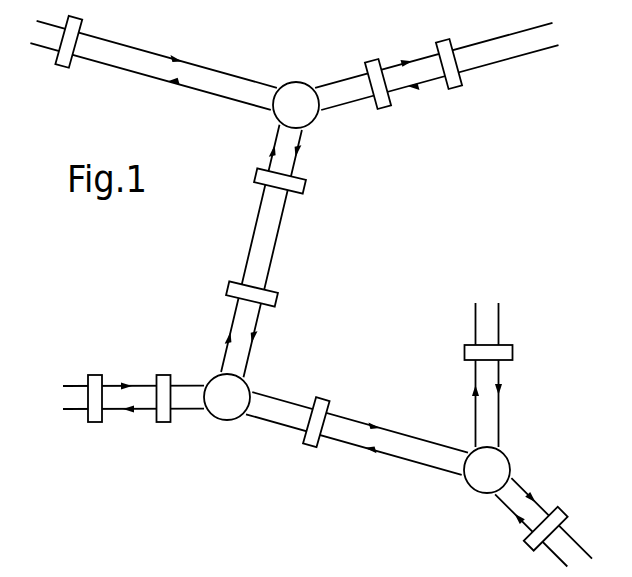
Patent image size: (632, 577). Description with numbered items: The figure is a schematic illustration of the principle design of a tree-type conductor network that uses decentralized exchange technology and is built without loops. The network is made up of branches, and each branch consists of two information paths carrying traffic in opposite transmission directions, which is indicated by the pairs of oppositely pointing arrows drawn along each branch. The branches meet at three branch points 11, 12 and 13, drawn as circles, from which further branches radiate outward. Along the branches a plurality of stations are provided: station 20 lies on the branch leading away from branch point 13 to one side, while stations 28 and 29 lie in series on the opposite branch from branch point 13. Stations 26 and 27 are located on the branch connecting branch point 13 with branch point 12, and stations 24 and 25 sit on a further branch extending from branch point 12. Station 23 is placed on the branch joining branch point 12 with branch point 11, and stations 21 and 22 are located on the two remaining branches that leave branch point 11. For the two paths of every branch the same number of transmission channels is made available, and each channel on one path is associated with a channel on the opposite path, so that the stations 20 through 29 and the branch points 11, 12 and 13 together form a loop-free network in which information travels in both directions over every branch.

The branch point 11 is at (497, 468).
The branch point 12 is at (225, 420).
The branch point 13 is at (296, 82).
The station 20 is at (65, 67).
The station 21 is at (563, 511).
The station 22 is at (512, 352).
The station 23 is at (319, 399).
The station 24 is at (96, 375).
The station 25 is at (164, 375).
The station 26 is at (276, 300).
The station 27 is at (305, 186).
The station 28 is at (383, 108).
The station 29 is at (454, 89).